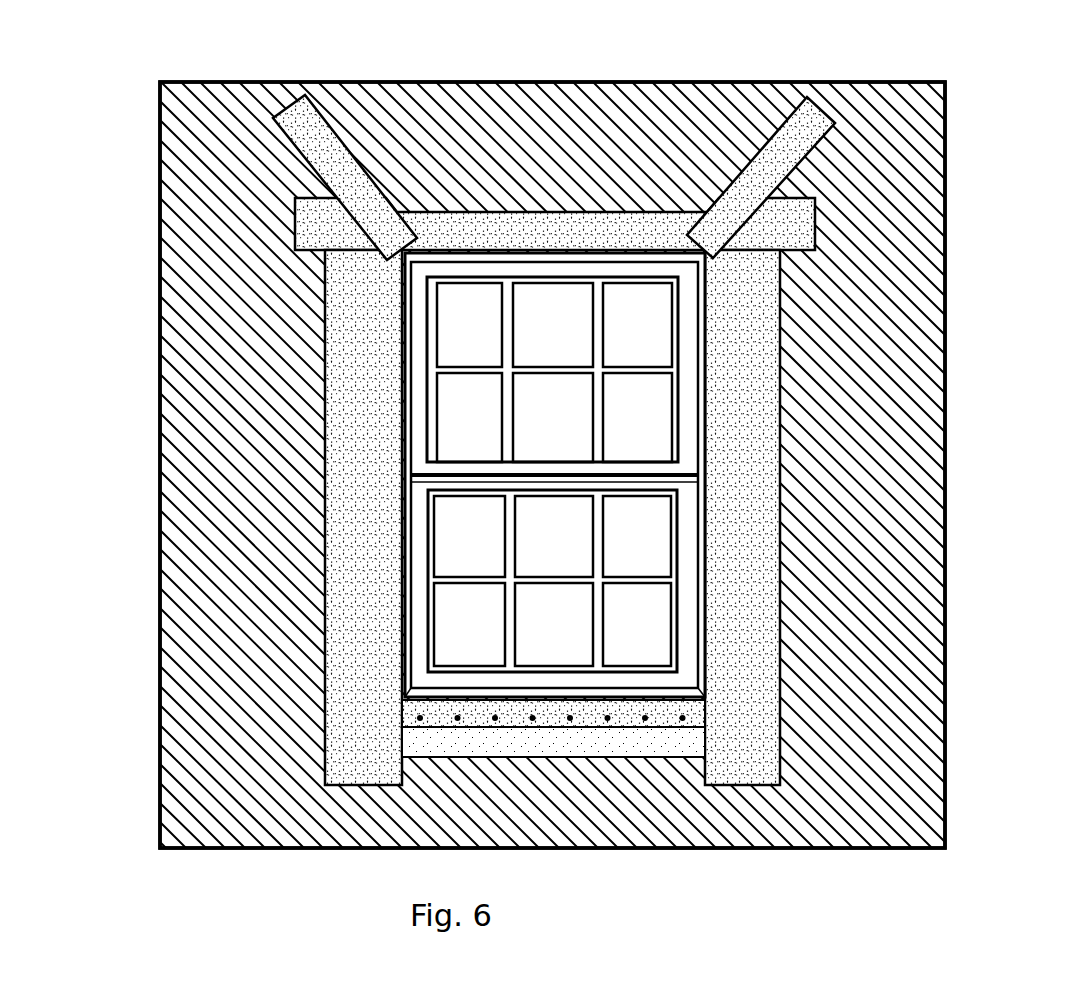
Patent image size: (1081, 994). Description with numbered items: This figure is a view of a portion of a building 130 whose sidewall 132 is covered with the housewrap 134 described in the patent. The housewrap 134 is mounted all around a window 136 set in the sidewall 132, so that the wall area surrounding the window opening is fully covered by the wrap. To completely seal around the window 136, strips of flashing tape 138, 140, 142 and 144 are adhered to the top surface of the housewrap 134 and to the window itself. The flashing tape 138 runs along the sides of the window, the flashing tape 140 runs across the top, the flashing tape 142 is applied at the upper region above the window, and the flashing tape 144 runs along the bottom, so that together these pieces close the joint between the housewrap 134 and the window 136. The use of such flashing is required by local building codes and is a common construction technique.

The building 130 is at (840, 60).
The sidewall 132 is at (945, 165).
The housewrap 134 is at (900, 243).
The window 136 is at (687, 447).
The flashing tape 138 is at (747, 620).
The flashing tape 140 is at (533, 222).
The flashing tape 142 is at (803, 126).
The flashing tape 144 is at (588, 742).